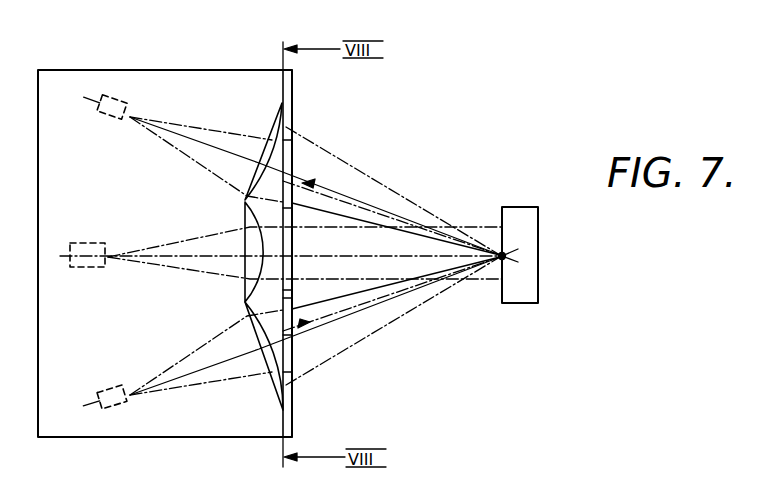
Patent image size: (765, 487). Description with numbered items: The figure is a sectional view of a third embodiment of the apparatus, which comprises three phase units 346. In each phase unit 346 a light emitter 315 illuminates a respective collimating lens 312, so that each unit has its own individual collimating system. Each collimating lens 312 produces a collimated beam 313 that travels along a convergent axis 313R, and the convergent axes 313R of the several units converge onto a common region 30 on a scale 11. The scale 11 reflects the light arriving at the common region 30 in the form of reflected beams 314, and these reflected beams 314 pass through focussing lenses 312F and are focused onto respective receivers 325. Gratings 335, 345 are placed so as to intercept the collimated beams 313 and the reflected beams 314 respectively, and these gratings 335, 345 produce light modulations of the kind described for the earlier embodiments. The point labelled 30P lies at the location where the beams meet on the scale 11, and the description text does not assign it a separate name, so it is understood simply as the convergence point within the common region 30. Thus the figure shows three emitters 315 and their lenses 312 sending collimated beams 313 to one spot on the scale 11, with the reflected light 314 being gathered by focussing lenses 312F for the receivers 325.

The receiver 325 is at (117, 95).
The focussing lens 312F is at (274, 150).
The grating 345 is at (304, 180).
The reflected beam 314 is at (360, 174).
The common region 30 is at (500, 253).
The scale 11 is at (518, 207).
The convergence point 30P is at (504, 255).
The convergent axis 313R is at (400, 294).
The collimated beam 313 is at (373, 336).
The grating 335 is at (312, 325).
The collimating lens 312 is at (282, 368).
The phase unit 346 is at (97, 403).
The light emitter 315 is at (120, 407).